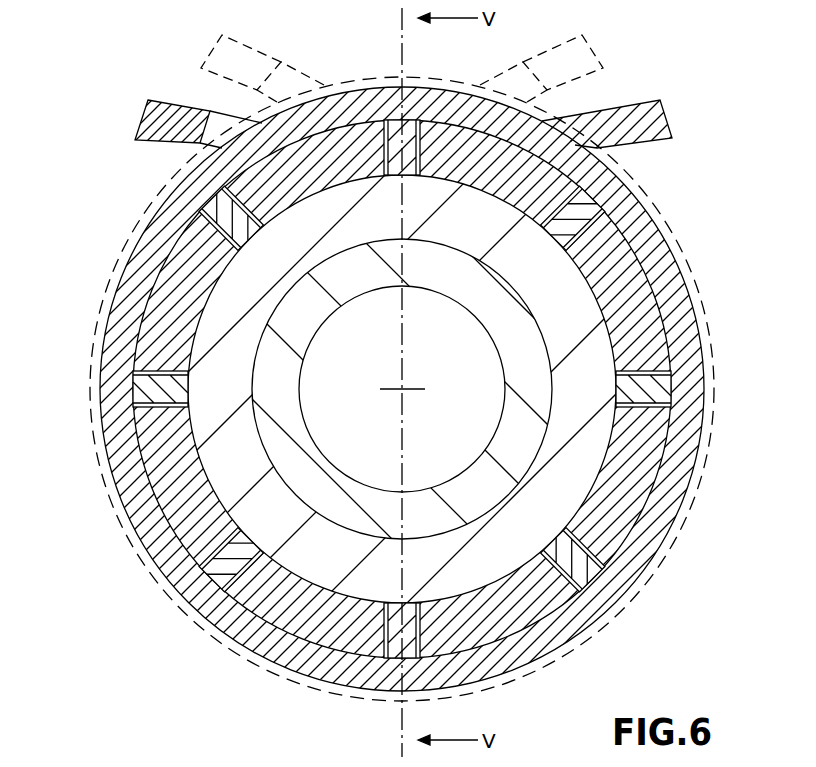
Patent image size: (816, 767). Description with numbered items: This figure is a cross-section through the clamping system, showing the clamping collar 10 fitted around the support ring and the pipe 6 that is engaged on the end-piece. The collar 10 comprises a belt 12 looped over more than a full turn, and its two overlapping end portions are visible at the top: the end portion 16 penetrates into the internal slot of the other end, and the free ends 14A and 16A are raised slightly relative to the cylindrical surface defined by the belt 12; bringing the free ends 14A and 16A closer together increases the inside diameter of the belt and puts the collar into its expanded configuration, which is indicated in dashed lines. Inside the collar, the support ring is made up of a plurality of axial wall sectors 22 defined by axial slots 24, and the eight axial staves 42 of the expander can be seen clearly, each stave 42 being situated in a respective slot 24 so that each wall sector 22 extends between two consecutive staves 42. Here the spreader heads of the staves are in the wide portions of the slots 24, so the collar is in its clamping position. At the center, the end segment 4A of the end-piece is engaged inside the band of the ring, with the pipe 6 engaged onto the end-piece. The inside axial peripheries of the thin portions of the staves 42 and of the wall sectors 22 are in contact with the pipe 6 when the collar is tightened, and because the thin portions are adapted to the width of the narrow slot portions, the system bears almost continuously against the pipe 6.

The clamping collar 10 is at (666, 201).
The belt 12 is at (673, 266).
The axial wall sector 22 is at (326, 153).
The pipe 6 is at (290, 258).
The end segment 4A is at (375, 282).
The axial stave 42 is at (135, 383).
The axial slot 24 is at (238, 213).
The end portion 16 is at (432, 106).
The free end 14A is at (163, 108).
The free end 16A is at (643, 104).